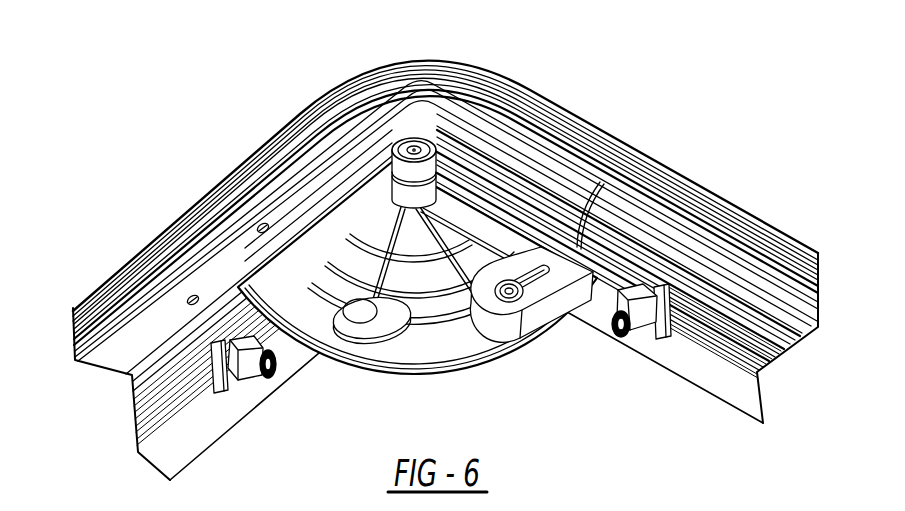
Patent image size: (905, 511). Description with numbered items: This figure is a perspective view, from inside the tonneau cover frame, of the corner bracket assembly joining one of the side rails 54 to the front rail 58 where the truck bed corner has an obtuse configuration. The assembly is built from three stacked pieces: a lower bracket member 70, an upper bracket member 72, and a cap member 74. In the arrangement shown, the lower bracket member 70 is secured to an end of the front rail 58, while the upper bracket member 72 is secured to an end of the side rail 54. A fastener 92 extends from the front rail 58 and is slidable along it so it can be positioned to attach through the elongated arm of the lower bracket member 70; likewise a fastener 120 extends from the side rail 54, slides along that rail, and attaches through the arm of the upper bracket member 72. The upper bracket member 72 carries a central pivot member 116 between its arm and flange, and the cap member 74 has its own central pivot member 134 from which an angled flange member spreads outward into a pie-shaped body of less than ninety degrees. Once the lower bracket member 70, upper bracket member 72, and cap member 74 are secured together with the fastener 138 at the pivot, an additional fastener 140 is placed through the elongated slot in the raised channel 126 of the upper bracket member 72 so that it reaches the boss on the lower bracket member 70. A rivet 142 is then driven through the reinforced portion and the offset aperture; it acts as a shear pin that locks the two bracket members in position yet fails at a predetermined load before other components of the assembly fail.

The side rail 54 is at (160, 338).
The front rail 58 is at (753, 300).
The lower bracket member 70 is at (577, 240).
The upper bracket member 72 is at (268, 275).
The cap member 74 is at (413, 105).
The fastener 92 is at (630, 335).
The central pivot member 116 is at (425, 197).
The fastener 120 is at (266, 372).
The raised channel 126 is at (529, 328).
The central pivot member 134 is at (418, 170).
The fastener 138 is at (410, 145).
The additional fastener 140 is at (512, 292).
The rivet 142 is at (358, 313).